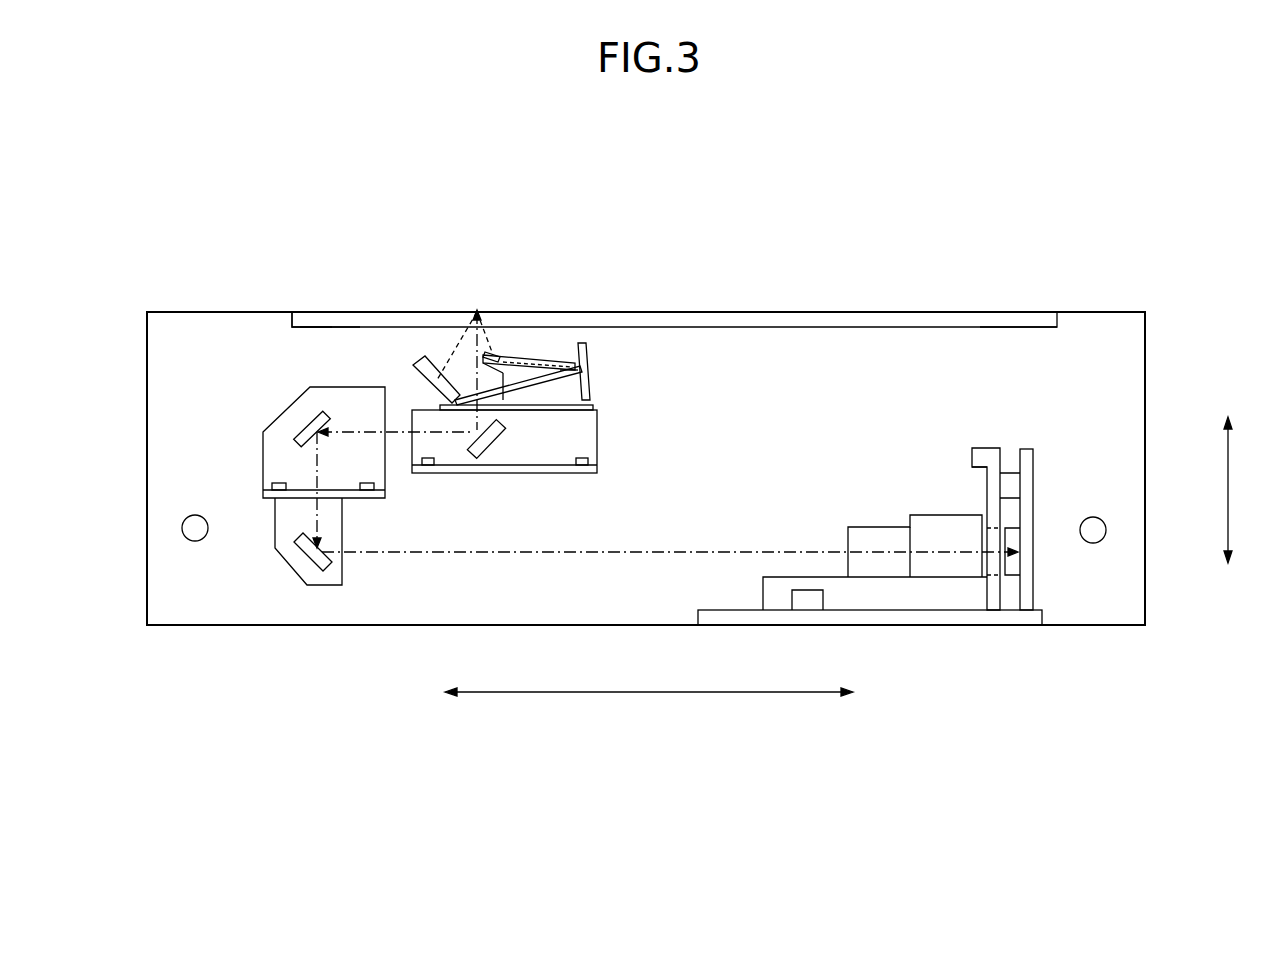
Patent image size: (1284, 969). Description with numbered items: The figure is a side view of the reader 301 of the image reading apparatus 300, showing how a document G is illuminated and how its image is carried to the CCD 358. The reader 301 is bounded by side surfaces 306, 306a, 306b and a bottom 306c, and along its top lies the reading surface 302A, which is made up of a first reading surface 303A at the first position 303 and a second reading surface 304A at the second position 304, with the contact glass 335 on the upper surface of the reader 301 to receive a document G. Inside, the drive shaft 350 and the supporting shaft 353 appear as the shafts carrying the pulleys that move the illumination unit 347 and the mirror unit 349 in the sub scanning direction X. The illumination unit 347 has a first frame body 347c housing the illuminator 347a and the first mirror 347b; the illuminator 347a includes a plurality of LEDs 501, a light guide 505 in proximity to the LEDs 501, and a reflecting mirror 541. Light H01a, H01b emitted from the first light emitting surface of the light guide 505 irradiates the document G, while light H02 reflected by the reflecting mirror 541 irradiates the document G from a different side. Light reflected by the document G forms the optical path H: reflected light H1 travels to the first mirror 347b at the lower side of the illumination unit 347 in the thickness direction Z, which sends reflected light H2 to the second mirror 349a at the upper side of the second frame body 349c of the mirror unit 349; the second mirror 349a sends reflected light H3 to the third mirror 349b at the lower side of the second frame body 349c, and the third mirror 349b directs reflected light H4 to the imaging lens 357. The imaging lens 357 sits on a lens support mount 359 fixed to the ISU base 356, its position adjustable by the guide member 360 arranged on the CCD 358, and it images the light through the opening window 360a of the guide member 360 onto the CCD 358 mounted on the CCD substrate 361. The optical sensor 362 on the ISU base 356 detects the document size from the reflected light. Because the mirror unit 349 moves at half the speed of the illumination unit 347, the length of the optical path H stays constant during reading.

The image reading apparatus 300 is at (1150, 254).
The reader 301 is at (1145, 355).
The reading surface 302A is at (722, 312).
The first position 303 is at (306, 335).
The first reading surface 303A is at (342, 312).
The second position 304 is at (935, 340).
The second reading surface 304A is at (870, 312).
The side surface 306 is at (1090, 312).
The side surface 306a is at (1145, 455).
The side surface 306b is at (147, 452).
The bottom wall 306c is at (598, 625).
The contact glass 335 is at (1003, 314).
The illumination unit 347 is at (531, 391).
The illuminator 347a is at (590, 372).
The first mirror 347b is at (482, 447).
The first frame body 347c is at (597, 440).
The mirror unit 349 is at (280, 433).
The second mirror 349a is at (310, 397).
The third mirror 349b is at (293, 552).
The second frame body 349c is at (263, 462).
The drive shaft 350 is at (1098, 533).
The supporting shaft 353 is at (188, 532).
The ISU base 356 is at (720, 620).
The imaging lens 357 is at (857, 527).
The CCD 358 is at (1016, 573).
The lens support mount 359 is at (778, 605).
The guide member 360 is at (985, 447).
The opening window 360a is at (978, 475).
The CCD substrate 361 is at (1030, 448).
The optical sensor 362 is at (808, 598).
The LED 501 is at (585, 365).
The light guide 505 is at (573, 335).
The reflecting mirror 541 is at (415, 362).
The document G is at (475, 310).
The optical path H is at (718, 540).
The reflected light H1 is at (462, 350).
The reflected light H2 is at (393, 430).
The reflected light H3 is at (318, 512).
The reflected light H4 is at (755, 548).
The light H01a is at (488, 330).
The light H01b is at (505, 345).
The light H02 is at (468, 320).
The sub scanning direction X is at (649, 706).
The thickness direction Z is at (1237, 490).